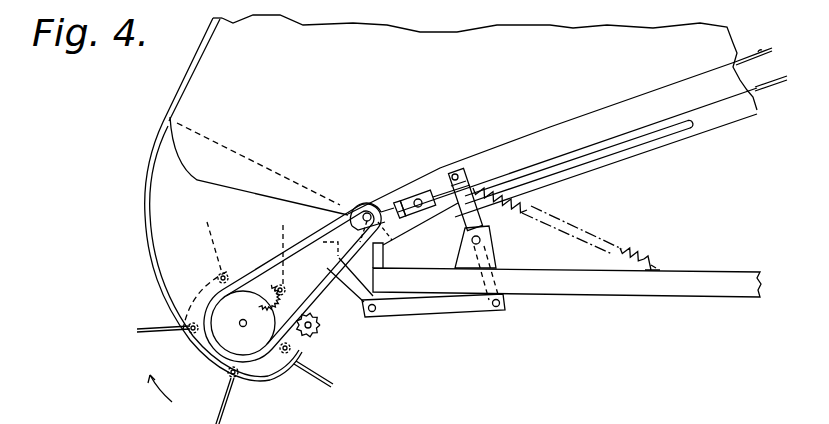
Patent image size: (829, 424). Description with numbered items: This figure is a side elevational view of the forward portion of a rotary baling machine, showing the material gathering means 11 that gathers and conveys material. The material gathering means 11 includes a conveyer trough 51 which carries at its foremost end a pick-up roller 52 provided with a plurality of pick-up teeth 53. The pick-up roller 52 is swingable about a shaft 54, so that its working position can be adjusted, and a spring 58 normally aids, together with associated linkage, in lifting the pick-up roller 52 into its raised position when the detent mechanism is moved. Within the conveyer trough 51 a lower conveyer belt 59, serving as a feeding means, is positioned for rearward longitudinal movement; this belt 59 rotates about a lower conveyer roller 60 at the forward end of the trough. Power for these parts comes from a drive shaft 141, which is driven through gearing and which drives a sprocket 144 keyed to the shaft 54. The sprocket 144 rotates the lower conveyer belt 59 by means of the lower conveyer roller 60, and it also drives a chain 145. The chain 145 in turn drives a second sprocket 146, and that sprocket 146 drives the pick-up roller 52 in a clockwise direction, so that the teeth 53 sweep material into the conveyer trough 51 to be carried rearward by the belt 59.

The material gathering means 11 is at (138, 231).
The conveyer trough 51 is at (433, 40).
The pick-up roller 52 is at (455, 310).
The pick-up teeth 53 is at (150, 328).
The shaft 54 is at (567, 250).
The spring 58 is at (630, 246).
The lower conveyer belt 59 is at (770, 84).
The lower conveyer roller 60 is at (372, 219).
The drive shaft 141 is at (632, 143).
The sprocket 144 is at (352, 212).
The chain 145 is at (270, 266).
The sprocket 146 is at (223, 307).